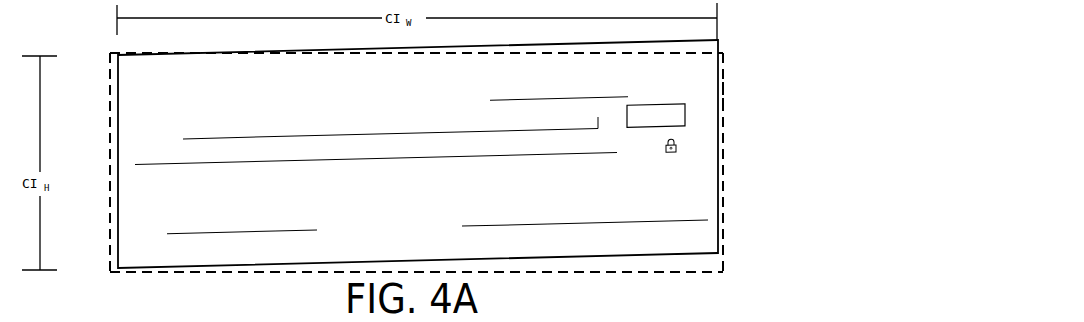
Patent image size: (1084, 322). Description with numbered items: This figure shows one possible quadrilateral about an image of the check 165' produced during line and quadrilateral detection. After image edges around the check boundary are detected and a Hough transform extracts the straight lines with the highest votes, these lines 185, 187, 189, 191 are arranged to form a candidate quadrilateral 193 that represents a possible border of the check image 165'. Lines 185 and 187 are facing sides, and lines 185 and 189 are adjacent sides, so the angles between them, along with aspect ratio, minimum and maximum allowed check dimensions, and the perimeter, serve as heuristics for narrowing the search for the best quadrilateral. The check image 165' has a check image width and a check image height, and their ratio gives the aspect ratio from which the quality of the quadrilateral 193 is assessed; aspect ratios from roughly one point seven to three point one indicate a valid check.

The image of the check 165' is at (443, 138).
The line 185 is at (700, 57).
The line 187 is at (683, 272).
The line 189 is at (722, 178).
The line 191 is at (110, 148).
The candidate quadrilateral 193 is at (722, 92).